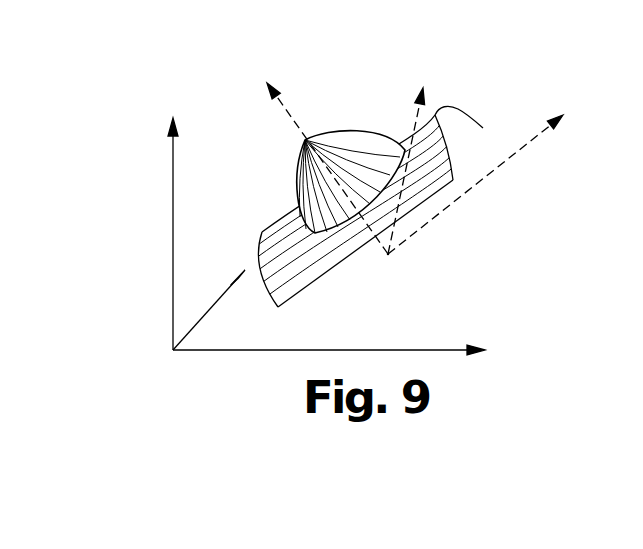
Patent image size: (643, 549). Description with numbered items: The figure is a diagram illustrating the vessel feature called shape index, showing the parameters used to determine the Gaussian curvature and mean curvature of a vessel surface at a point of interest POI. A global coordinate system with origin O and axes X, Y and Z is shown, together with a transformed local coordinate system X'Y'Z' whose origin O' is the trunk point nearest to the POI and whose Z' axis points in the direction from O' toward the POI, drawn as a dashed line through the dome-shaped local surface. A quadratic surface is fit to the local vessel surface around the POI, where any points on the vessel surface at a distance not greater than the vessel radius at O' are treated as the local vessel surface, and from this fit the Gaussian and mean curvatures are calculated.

The point of interest POI is at (351, 166).
The origin O is at (277, 315).
The X axis X is at (379, 231).
The Y axis Y is at (305, 201).
The Z axis Z is at (276, 202).